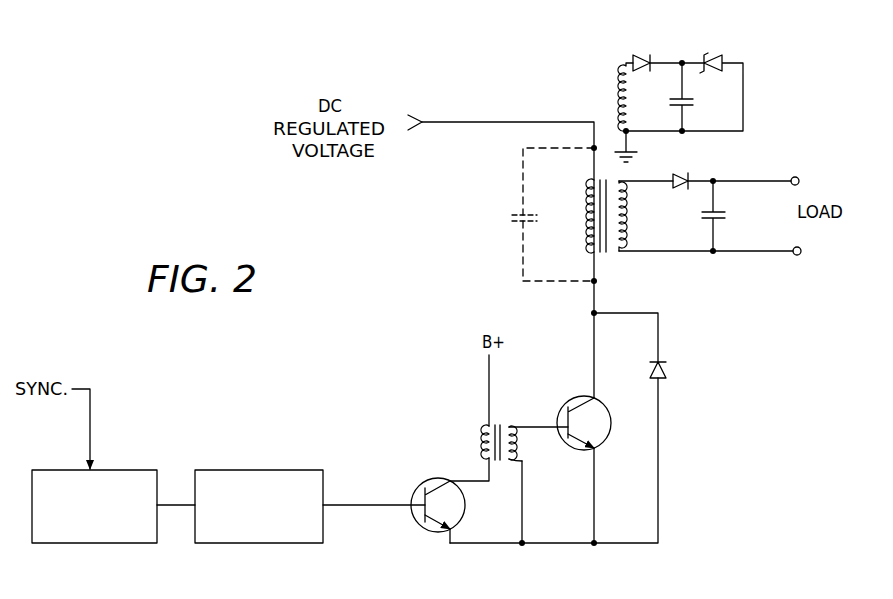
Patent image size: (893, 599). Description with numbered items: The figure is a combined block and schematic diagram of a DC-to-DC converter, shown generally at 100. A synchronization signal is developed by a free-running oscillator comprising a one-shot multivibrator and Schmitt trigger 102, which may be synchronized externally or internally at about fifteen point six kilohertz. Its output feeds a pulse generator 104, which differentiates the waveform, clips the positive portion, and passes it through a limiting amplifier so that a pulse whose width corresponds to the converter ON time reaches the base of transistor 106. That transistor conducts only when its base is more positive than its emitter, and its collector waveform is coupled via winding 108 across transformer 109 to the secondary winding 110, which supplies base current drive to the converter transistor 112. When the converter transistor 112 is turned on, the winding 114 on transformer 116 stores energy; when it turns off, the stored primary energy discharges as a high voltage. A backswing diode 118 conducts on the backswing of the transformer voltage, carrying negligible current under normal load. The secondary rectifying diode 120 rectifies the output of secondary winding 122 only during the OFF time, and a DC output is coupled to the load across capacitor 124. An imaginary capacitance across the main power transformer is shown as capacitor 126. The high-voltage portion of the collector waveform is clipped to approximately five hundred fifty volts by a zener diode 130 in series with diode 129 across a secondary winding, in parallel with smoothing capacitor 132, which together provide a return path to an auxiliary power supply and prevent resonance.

The DC-to-DC converter 100 is at (228, 497).
The one-shot multivibrator and Schmitt trigger 102 is at (135, 470).
The pulse generator 104 is at (283, 470).
The transistor 106 is at (418, 487).
The winding 108 is at (482, 428).
The transformer 109 is at (497, 423).
The secondary winding 110 is at (518, 442).
The converter transistor 112 is at (612, 427).
The winding 114 is at (585, 230).
The transformer 116 is at (604, 253).
The diode 118 is at (668, 366).
The secondary rectifying diode 120 is at (687, 170).
The secondary winding 122 is at (630, 205).
The capacitor 124 is at (730, 216).
The capacitor 126 is at (513, 216).
The diode 129 is at (648, 54).
The zener diode 130 is at (708, 56).
The smoothing capacitor 132 is at (693, 100).